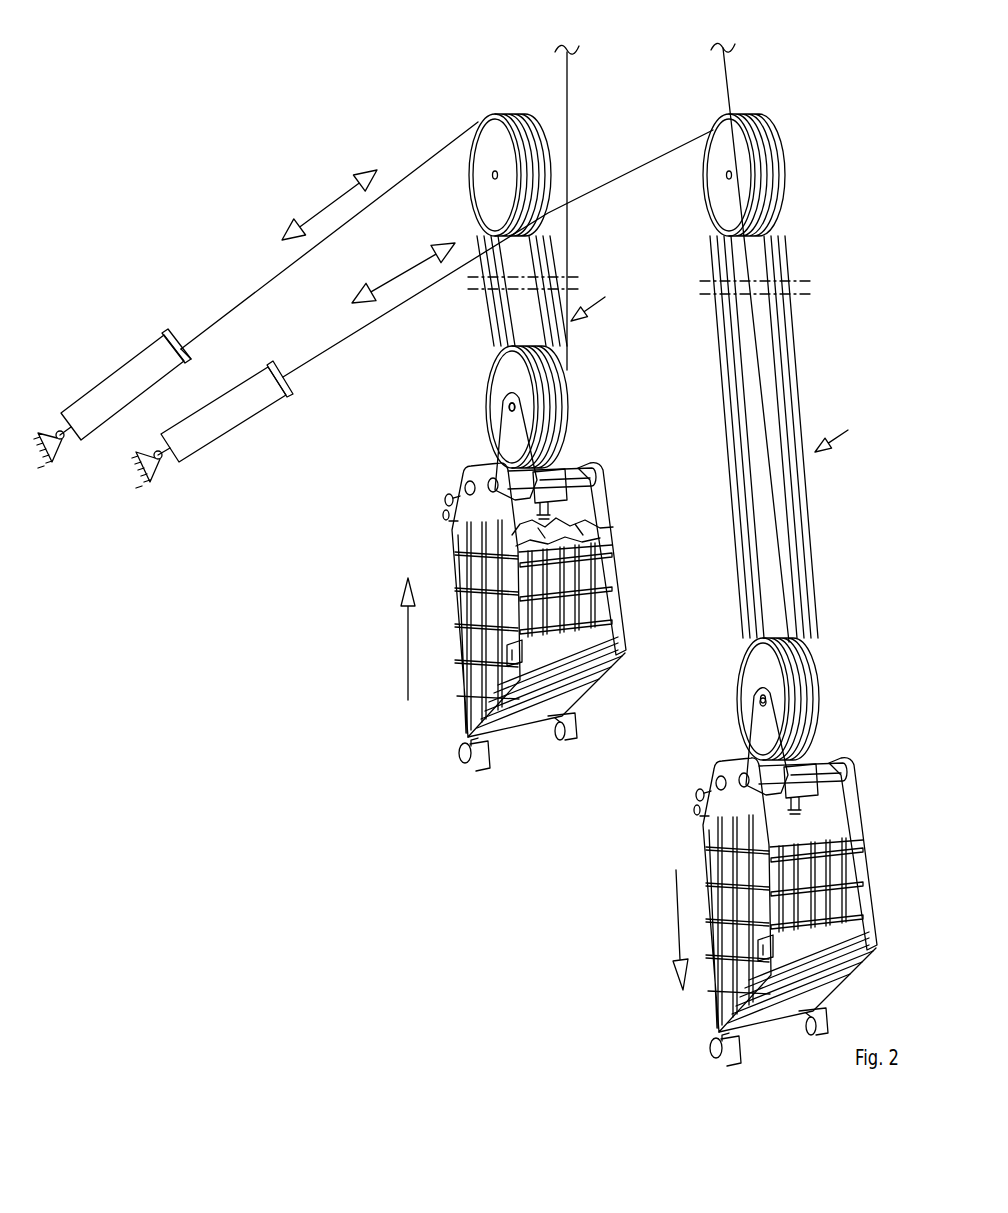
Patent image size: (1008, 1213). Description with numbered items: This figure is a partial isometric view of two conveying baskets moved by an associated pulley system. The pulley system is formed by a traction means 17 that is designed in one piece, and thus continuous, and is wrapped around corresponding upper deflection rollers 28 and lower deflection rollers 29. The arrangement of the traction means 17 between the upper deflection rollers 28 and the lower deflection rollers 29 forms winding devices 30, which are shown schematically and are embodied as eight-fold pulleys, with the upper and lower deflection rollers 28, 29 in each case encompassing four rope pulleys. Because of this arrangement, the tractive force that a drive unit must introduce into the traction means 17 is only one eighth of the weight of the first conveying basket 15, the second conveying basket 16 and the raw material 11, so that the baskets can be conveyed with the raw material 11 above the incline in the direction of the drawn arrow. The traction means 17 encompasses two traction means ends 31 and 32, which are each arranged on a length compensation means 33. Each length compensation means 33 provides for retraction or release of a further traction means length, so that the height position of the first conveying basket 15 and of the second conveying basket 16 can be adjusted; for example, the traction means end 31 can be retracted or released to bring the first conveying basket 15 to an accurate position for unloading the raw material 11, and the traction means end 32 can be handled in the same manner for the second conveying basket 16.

The raw material 11 is at (590, 524).
The first conveying basket 15 is at (514, 582).
The second conveying basket 16 is at (872, 897).
The traction means 17 is at (560, 266).
The upper deflection rollers 28 is at (497, 112).
The lower deflection rollers 29 is at (566, 408).
The winding devices 30 is at (721, 363).
The traction means end 31 is at (237, 305).
The traction means end 32 is at (335, 343).
The length compensation means 33 is at (205, 410).